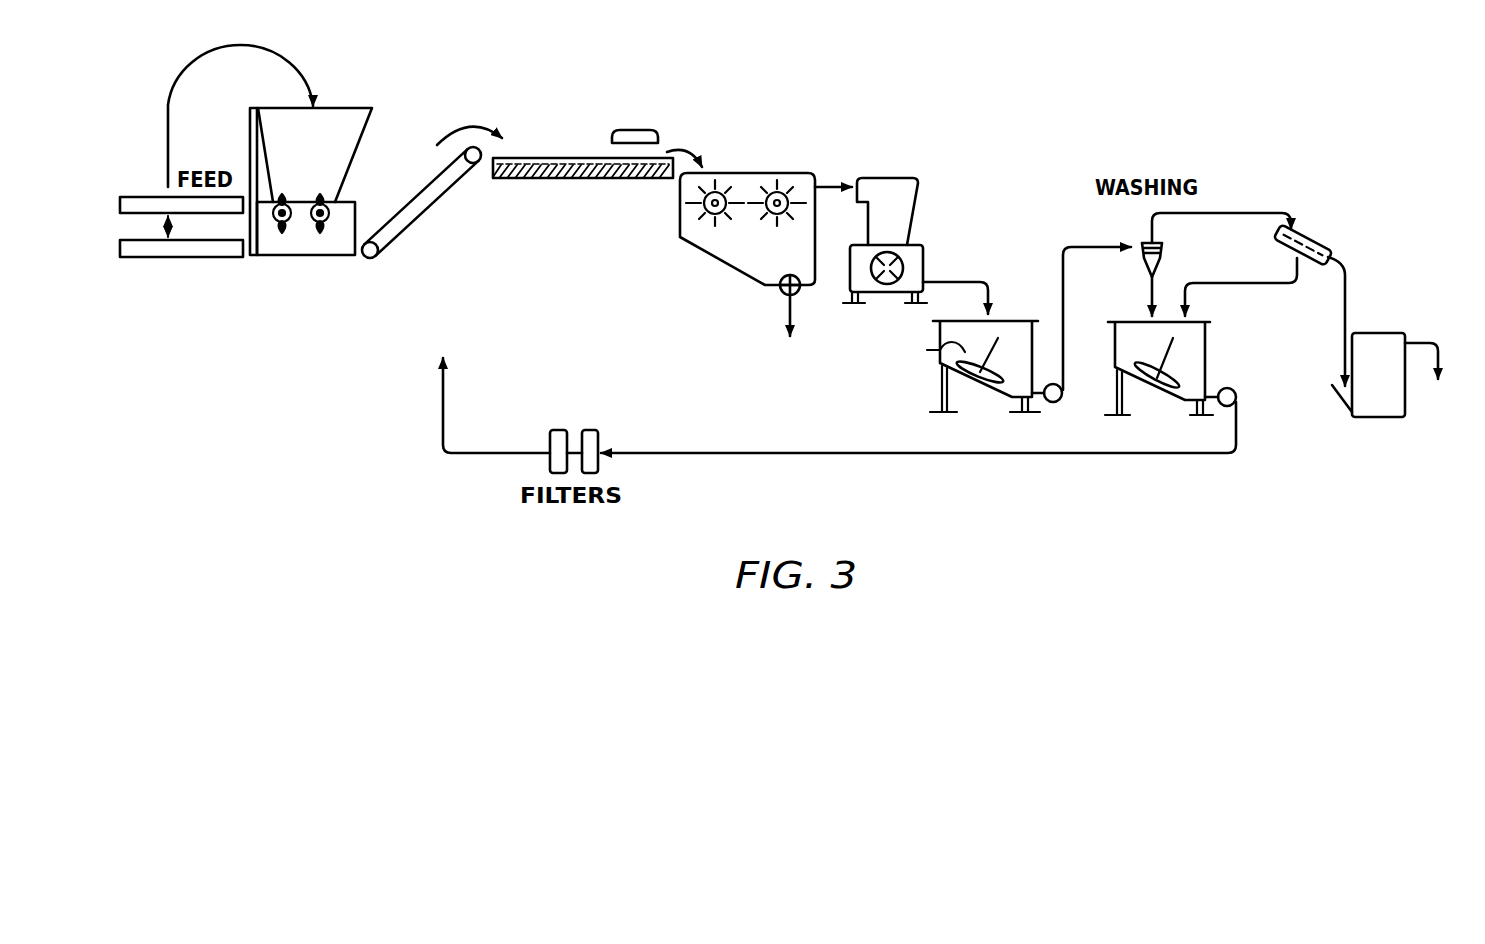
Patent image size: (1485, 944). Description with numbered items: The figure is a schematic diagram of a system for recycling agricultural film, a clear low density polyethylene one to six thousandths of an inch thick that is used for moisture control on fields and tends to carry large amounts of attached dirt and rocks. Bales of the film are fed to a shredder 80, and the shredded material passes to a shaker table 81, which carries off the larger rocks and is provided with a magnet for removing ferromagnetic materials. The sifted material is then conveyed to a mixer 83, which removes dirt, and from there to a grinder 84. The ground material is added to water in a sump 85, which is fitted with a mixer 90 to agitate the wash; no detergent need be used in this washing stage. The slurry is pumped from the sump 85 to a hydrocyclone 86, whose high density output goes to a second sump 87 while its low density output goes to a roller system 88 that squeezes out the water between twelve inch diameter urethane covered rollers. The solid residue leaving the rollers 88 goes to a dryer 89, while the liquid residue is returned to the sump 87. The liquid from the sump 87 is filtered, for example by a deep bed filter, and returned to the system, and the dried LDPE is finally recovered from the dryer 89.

The shredder 80 is at (297, 264).
The shaker table 81 is at (555, 147).
The mixer 83 is at (711, 261).
The grinder 84 is at (928, 201).
The sump 85 is at (1018, 311).
The hydrocyclone 86 is at (1166, 254).
The sump 87 is at (1209, 357).
The roller system 88 is at (1324, 232).
The dryer 89 is at (1391, 331).
The mixer 90 is at (1167, 388).